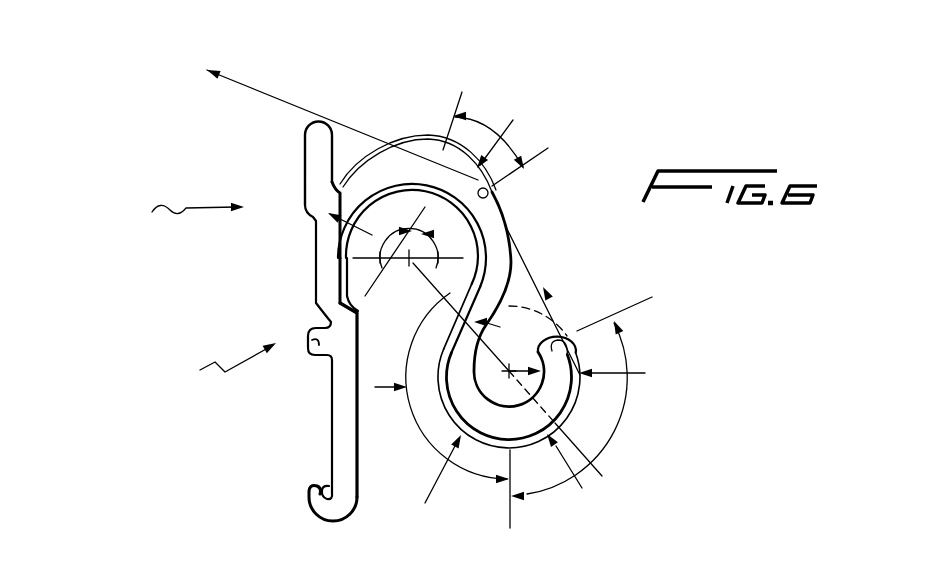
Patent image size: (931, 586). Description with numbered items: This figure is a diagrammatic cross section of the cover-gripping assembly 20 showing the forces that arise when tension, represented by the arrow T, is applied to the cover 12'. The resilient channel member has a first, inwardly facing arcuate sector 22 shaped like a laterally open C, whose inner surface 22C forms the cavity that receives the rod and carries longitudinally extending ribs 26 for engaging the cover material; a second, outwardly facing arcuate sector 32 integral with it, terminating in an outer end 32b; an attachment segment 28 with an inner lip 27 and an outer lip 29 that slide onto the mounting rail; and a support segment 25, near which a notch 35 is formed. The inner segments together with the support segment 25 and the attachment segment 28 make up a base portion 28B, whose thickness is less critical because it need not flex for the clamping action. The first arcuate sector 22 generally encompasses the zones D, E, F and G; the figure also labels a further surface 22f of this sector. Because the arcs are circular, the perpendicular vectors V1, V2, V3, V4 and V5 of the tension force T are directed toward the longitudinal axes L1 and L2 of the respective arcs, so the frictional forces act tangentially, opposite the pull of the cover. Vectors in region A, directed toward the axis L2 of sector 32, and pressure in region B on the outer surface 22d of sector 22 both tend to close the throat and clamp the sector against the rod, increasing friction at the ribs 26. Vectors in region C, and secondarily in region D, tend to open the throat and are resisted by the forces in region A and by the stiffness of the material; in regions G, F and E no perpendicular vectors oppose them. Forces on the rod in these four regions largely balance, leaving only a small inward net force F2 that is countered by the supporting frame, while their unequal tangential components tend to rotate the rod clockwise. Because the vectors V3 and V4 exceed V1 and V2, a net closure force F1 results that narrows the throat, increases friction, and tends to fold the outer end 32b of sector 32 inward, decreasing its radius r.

The mounting surface tangent line 12' is at (341, 115).
The cover-gripping assembly 20 is at (150, 218).
The first arcuate sector 22 is at (400, 166).
The inner surface of first arcuate sector 22C is at (338, 259).
The outer surface of first arcuate sector 22d is at (495, 193).
The clip intermediate wall 22f is at (465, 307).
The support segment 25 is at (305, 149).
The longitudinal-extending ribs 26 is at (340, 292).
The inner lip 27 is at (309, 350).
The attachment segment 28 is at (331, 427).
The base portion 28B is at (220, 356).
The outer lip 29 is at (308, 496).
The second arcuate sector 32 is at (564, 392).
The outer end of second arcuate sector 32b is at (580, 328).
The notch 35 is at (320, 228).
The tensile force T is at (212, 82).
The region B is at (477, 123).
The perpendicular force vector V5 is at (513, 120).
The inward net force F2 is at (341, 183).
The region F is at (398, 234).
The region G is at (436, 242).
The region E is at (380, 269).
The region D is at (438, 266).
The longitudinal axis of first arc L1 is at (409, 262).
The net closure force F1 is at (500, 328).
The radius of second sector r is at (525, 364).
The longitudinal axis of second arcuate sector L2 is at (490, 372).
The perpendicular force vector V4 is at (640, 373).
The region A is at (603, 436).
The perpendicular force vector V1 is at (393, 390).
The region C is at (425, 440).
The perpendicular force vector V2 is at (439, 492).
The perpendicular force vector V3 is at (584, 488).